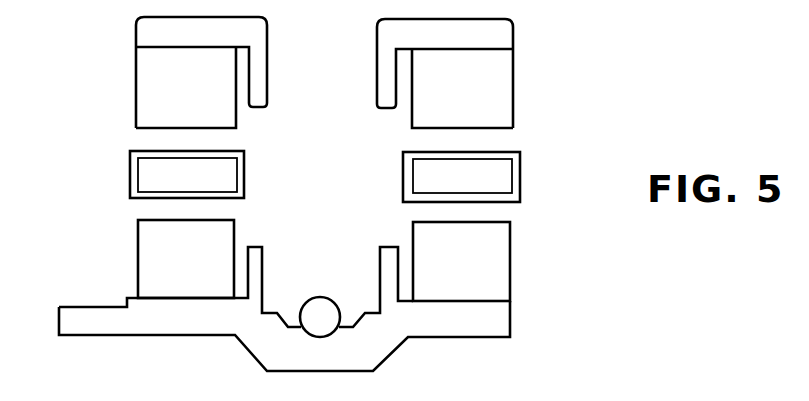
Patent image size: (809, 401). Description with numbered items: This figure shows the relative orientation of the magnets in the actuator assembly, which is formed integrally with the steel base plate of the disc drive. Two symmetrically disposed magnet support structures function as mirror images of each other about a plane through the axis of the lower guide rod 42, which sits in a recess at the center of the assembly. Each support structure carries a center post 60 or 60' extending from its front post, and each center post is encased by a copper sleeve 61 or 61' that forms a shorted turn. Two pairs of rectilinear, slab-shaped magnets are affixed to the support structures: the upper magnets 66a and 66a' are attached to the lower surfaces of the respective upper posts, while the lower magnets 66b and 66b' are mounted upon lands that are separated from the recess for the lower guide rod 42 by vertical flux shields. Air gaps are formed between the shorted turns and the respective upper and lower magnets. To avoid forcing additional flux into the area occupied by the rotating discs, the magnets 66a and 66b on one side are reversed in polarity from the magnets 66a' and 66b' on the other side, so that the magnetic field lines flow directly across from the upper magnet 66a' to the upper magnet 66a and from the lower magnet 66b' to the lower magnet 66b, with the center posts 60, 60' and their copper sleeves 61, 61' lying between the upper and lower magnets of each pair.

The upper magnet 66a is at (156, 72).
The upper magnet 66a' is at (483, 74).
The center post 60 is at (161, 174).
The copper sleeve 61 is at (155, 184).
The center post 60' is at (490, 168).
The copper sleeve 61' is at (487, 181).
The lower magnet 66b is at (155, 259).
The lower magnet 66b' is at (499, 261).
The lower guide rod 42 is at (325, 313).